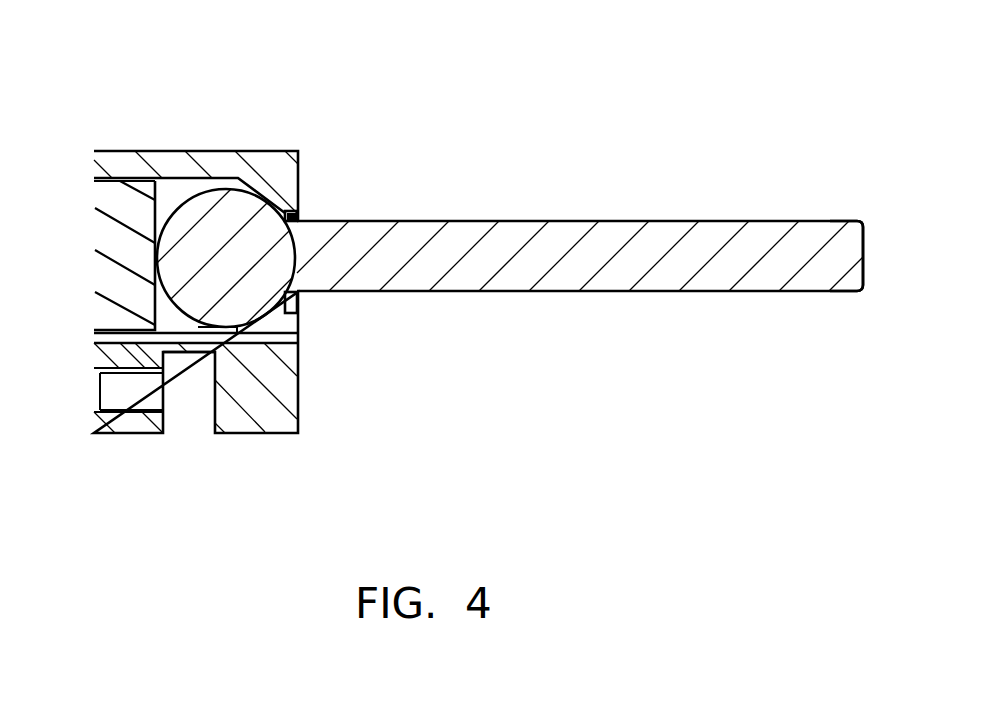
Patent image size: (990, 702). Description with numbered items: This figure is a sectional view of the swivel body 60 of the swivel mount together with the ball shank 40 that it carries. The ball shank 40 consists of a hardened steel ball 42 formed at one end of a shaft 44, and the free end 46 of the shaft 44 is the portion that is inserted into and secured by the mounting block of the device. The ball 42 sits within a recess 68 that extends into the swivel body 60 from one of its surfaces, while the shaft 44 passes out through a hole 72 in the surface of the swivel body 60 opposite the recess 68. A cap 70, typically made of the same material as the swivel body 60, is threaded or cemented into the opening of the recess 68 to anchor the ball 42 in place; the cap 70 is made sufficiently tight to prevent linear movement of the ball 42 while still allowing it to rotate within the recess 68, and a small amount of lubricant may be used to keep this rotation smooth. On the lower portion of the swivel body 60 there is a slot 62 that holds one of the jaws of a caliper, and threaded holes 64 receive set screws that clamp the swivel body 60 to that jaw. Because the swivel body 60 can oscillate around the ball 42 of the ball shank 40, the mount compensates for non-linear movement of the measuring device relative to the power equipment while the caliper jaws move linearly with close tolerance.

The ball shank 40 is at (538, 208).
The ball 42 is at (246, 259).
The shaft 44 is at (699, 246).
The free end 46 is at (847, 253).
The swivel body 60 is at (299, 163).
The slot 62 is at (187, 405).
The threaded holes 64 is at (111, 392).
The recess 68 is at (170, 192).
The cap 70 is at (106, 237).
The hole 72 is at (296, 213).